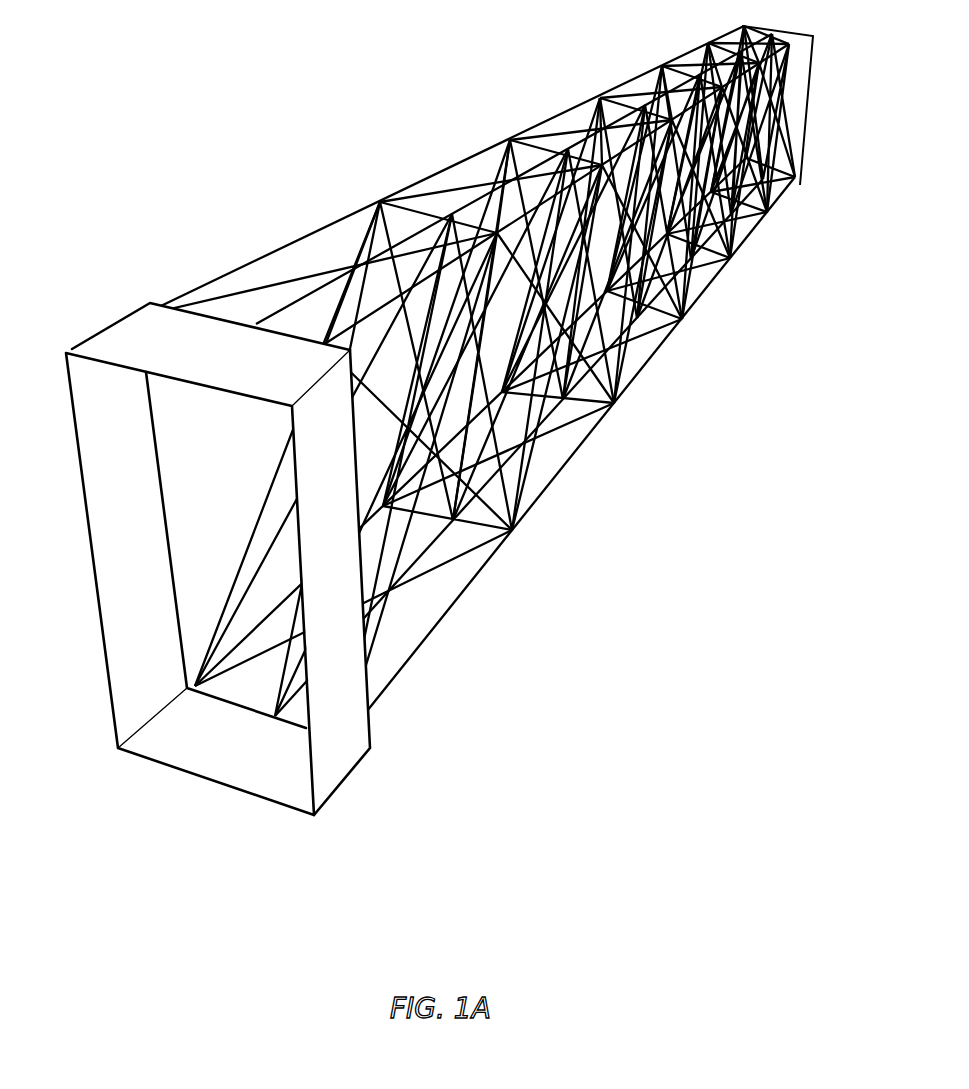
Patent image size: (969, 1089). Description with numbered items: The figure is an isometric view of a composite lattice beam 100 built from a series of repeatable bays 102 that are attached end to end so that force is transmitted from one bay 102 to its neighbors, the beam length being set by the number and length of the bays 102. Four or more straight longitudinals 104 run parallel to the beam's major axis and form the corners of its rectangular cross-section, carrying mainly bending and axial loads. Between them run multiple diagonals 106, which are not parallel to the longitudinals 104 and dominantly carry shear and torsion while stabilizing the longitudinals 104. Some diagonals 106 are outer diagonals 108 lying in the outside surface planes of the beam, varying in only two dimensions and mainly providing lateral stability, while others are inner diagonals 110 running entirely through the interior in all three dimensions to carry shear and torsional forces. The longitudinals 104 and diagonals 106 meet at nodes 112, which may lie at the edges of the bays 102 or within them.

The composite lattice beam 100 is at (133, 100).
The bay 102 is at (206, 250).
The longitudinal 104 is at (442, 172).
The diagonal 106 is at (567, 123).
The outer diagonal 108 is at (542, 467).
The inner diagonal 110 is at (372, 208).
The node 112 is at (457, 510).